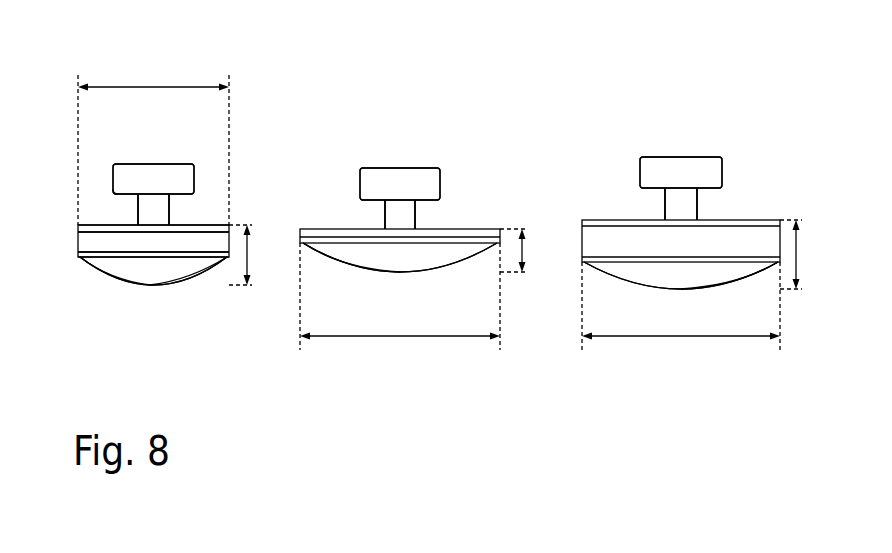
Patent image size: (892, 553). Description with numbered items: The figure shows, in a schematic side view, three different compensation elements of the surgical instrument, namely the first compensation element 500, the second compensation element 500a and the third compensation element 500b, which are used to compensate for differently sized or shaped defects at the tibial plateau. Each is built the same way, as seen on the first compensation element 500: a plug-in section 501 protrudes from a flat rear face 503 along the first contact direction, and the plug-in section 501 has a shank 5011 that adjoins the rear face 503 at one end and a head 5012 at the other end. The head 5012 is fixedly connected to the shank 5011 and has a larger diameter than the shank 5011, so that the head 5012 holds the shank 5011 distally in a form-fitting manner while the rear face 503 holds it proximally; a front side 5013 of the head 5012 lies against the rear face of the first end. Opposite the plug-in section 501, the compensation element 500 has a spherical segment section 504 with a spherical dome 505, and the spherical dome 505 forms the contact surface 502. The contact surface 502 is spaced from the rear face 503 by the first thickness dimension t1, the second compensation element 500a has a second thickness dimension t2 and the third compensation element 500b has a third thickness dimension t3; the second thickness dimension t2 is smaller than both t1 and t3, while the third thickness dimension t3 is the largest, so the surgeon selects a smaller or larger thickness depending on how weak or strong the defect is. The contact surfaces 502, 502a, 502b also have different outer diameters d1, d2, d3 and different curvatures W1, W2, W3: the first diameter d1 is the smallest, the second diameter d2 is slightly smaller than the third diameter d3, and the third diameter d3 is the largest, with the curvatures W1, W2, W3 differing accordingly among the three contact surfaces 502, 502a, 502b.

The first compensation element 500 is at (174, 70).
The second compensation element 500a is at (426, 118).
The third compensation element 500b is at (699, 116).
The plug-in section 501 is at (214, 160).
The shank 5011 is at (147, 212).
The head 5012 is at (166, 171).
The front side 5013 is at (117, 197).
The contact surface 502 is at (135, 284).
The contact surface 502a is at (402, 272).
The contact surface 502b is at (660, 290).
The rear face 503 is at (208, 222).
The spherical segment section 504 is at (104, 266).
The spherical dome 505 is at (180, 268).
The first diameter d1 is at (145, 86).
The second diameter d2 is at (402, 338).
The third diameter d3 is at (687, 338).
The first thickness dimension t1 is at (250, 257).
The second thickness dimension t2 is at (527, 251).
The third thickness dimension t3 is at (800, 254).
The first curvature W1 is at (118, 280).
The second curvature W2 is at (385, 271).
The third curvature W3 is at (740, 284).